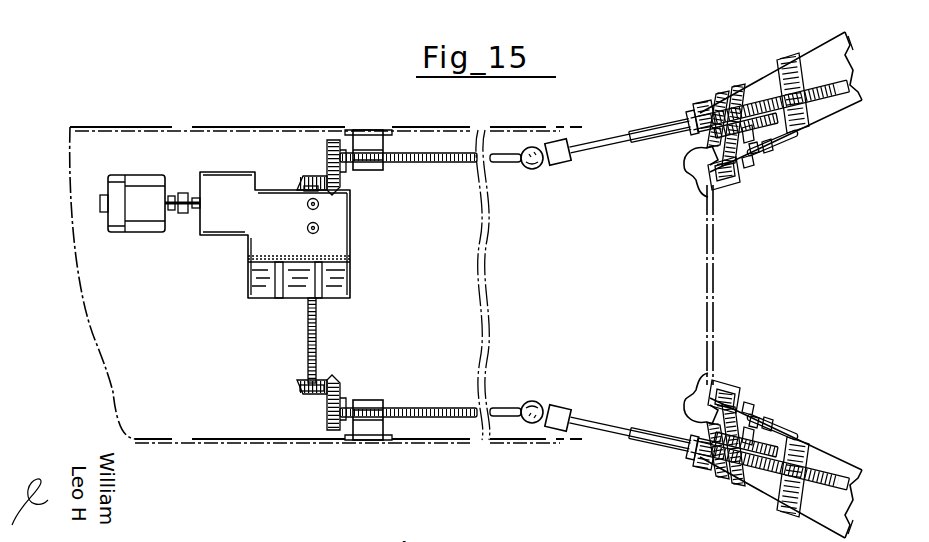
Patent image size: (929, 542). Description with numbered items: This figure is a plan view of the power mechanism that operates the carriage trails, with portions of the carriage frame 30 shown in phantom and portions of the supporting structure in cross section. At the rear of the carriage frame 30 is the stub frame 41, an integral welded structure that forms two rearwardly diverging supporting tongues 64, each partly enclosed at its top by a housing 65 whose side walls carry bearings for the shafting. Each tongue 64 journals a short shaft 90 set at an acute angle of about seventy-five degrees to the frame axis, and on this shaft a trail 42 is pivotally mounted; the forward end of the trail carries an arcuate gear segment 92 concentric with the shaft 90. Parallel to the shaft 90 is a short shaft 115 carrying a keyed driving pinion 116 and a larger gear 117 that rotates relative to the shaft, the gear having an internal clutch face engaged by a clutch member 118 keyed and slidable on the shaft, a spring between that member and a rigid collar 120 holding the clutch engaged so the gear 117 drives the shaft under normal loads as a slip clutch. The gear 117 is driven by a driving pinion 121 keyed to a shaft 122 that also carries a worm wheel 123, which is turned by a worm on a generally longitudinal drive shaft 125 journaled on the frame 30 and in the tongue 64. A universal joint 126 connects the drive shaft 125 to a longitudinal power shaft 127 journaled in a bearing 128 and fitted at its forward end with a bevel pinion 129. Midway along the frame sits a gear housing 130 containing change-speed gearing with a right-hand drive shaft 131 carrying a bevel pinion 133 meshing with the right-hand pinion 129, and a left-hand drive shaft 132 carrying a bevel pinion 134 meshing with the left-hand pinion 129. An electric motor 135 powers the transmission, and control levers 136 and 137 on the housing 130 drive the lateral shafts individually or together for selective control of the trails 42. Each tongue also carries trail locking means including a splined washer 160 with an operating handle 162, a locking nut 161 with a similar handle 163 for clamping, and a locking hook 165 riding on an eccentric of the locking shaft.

The carriage frame 30 is at (541, 129).
The stub frame 41 is at (715, 279).
The trail 42 is at (868, 103).
The supporting tongue 64 is at (824, 108).
The housing 65 is at (772, 498).
The shaft 90 is at (790, 60).
The gear segment 92 is at (855, 70).
The shaft 115 is at (723, 91).
The driving pinion 116 is at (738, 84).
The gear 117 is at (792, 136).
The clutch member 118 is at (768, 152).
The collar 120 is at (755, 154).
The driving pinion 121 is at (712, 166).
The shaft 122 is at (703, 102).
The worm wheel 123 is at (696, 114).
The drive shaft 125 is at (642, 127).
The universal joint 126 is at (542, 166).
The power shaft 127 is at (466, 163).
The bearing 128 is at (365, 138).
The bevel pinion 129 is at (336, 138).
The gear housing 130 is at (256, 284).
The right-hand drive shaft 131 is at (307, 189).
The left-hand drive shaft 132 is at (309, 325).
The bevel pinion 133 is at (311, 177).
The bevel pinion 134 is at (298, 388).
The electric motor 135 is at (140, 235).
The control lever 136 is at (319, 204).
The control lever 137 is at (319, 229).
The splined washer 160 is at (720, 188).
The locking nut 161 is at (736, 180).
The operating handle 162 is at (790, 146).
The handle 163 is at (749, 166).
The locking hook 165 is at (673, 130).